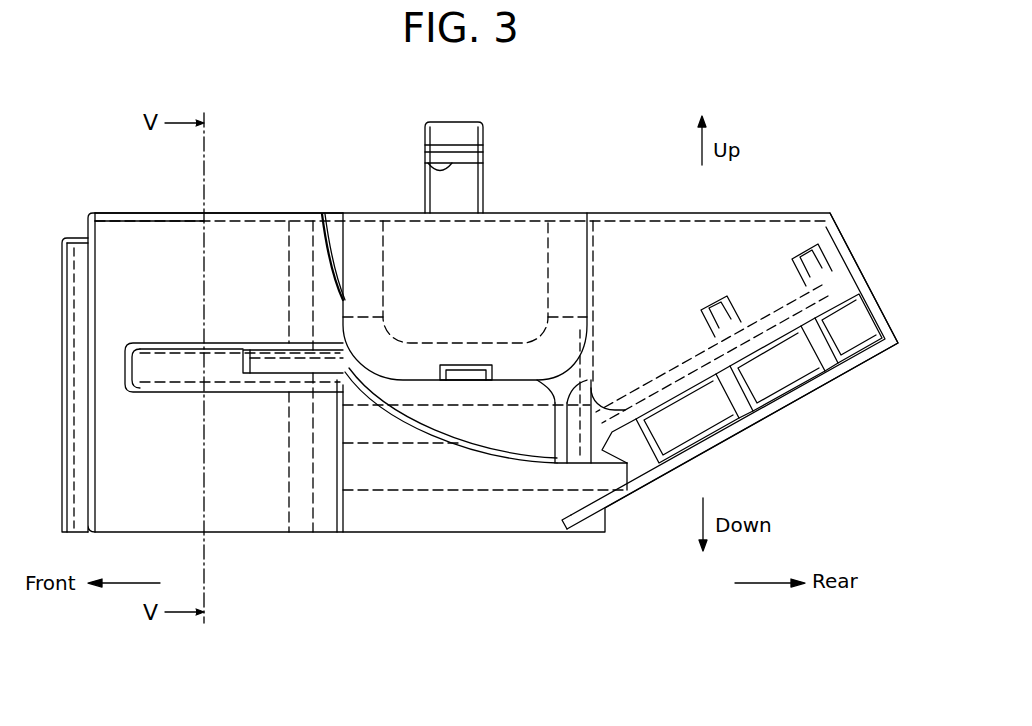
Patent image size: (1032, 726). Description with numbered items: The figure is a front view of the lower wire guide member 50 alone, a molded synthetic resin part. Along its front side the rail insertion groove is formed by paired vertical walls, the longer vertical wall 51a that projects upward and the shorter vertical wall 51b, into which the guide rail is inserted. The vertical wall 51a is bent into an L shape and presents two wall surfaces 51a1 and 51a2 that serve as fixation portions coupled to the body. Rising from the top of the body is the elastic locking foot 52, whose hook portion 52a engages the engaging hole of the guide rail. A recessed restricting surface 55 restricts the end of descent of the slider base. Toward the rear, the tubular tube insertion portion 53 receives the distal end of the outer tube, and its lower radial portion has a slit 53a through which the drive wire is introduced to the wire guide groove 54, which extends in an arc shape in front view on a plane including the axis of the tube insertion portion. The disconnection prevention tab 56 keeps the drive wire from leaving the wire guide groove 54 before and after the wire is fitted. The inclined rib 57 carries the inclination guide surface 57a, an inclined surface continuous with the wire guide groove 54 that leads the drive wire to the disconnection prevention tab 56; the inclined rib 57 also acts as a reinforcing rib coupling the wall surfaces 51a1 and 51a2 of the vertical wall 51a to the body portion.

The wire guide member 50 is at (629, 156).
The vertical wall 51a is at (128, 238).
The wall surface 51a1 is at (128, 238).
The wall surface 51a2 is at (318, 250).
The vertical wall 51b is at (80, 248).
The elastic locking foot 52 is at (468, 130).
The hook portion 52a is at (450, 166).
The tubular tube insertion portion 53 is at (852, 352).
The slit 53a is at (752, 435).
The wire guide groove 54 is at (500, 450).
The restricting surface 55 is at (560, 213).
The disconnection prevention tab 56 is at (283, 365).
The inclined rib 57 is at (173, 370).
The inclination guide surface 57a is at (173, 372).